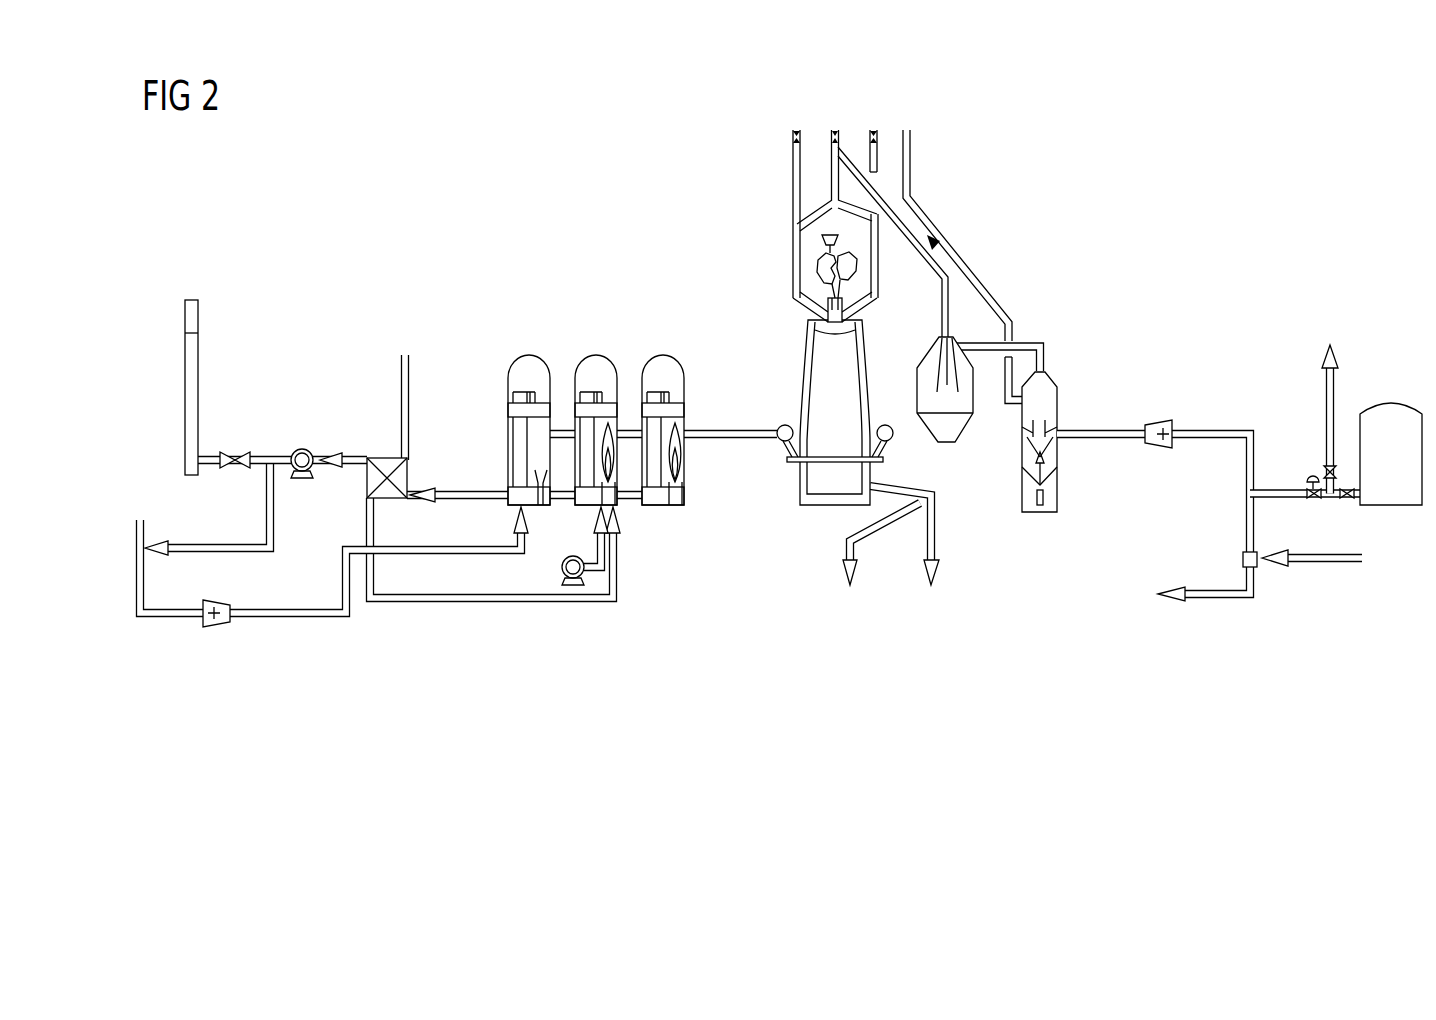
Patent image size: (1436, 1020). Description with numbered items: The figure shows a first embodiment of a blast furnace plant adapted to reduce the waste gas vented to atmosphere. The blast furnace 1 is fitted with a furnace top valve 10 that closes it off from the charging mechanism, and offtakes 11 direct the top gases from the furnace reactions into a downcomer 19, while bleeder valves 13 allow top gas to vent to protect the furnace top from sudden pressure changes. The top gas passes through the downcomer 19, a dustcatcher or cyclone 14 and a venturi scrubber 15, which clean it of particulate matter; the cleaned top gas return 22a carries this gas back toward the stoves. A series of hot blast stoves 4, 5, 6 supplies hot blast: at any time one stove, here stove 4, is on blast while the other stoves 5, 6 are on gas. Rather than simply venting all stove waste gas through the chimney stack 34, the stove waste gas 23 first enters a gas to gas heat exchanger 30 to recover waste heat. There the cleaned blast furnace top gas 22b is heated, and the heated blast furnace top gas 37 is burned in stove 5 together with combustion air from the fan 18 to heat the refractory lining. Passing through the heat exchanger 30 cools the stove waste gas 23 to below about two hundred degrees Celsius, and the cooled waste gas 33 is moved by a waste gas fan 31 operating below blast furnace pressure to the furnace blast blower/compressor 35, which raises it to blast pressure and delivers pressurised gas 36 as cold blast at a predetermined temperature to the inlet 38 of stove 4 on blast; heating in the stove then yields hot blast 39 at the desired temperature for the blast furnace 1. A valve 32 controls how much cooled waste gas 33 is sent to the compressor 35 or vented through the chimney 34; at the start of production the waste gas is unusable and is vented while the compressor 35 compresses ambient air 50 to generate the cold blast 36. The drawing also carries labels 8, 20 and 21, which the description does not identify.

The blast furnace 1 is at (790, 376).
The hot blast stove 4 is at (528, 357).
The hot blast stove 5 is at (595, 357).
The hot blast stove 6 is at (662, 357).
The feed device / atomizer 8 is at (818, 270).
The furnace top valve 10 is at (858, 295).
The offtakes 11 is at (877, 270).
The bleeder valves 13 is at (835, 130).
The cyclone 14 is at (962, 432).
The venturi scrubber 15 is at (1040, 512).
The fan 18 is at (561, 571).
The downcomer 19 is at (945, 236).
The slag outlet 20 is at (879, 560).
The metal outlet 21 is at (908, 552).
The cleaned top gas return 22a is at (1239, 478).
The cleaned blast furnace top gas 22b is at (410, 373).
The stove waste gas 23 is at (460, 492).
The gas to gas heat exchanger 30 is at (385, 458).
The waste gas fan 31 is at (302, 449).
The valve 32 is at (238, 452).
The cooled waste gas 33 is at (270, 508).
The chimney stack 34 is at (190, 364).
The furnace blast blower/compressor 35 is at (216, 628).
The pressurised gas 36 is at (296, 617).
The heated blast furnace top gas 37 is at (414, 602).
The inlet 38 is at (540, 507).
The hot blast 39 is at (738, 438).
The ambient air 50 is at (143, 525).